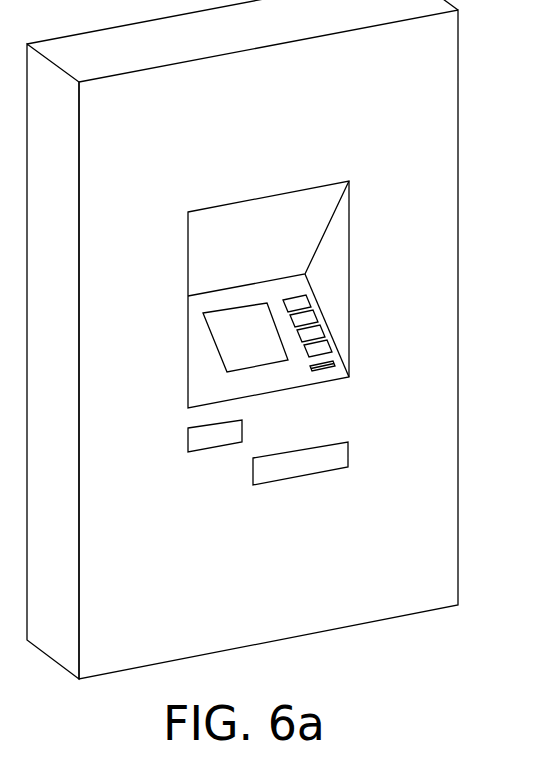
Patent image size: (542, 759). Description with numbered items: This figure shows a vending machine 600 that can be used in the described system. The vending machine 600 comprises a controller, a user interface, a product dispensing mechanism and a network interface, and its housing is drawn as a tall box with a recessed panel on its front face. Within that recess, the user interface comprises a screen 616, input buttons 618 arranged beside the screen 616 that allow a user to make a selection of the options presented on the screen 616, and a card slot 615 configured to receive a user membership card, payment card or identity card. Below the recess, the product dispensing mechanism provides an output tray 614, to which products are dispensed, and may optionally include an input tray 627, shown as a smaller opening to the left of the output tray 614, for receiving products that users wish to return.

The vending machine 600 is at (458, 346).
The screen 616 is at (224, 335).
The input buttons 618 is at (330, 345).
The card slot 615 is at (322, 370).
The input tray 627 is at (188, 438).
The output tray 614 is at (349, 452).